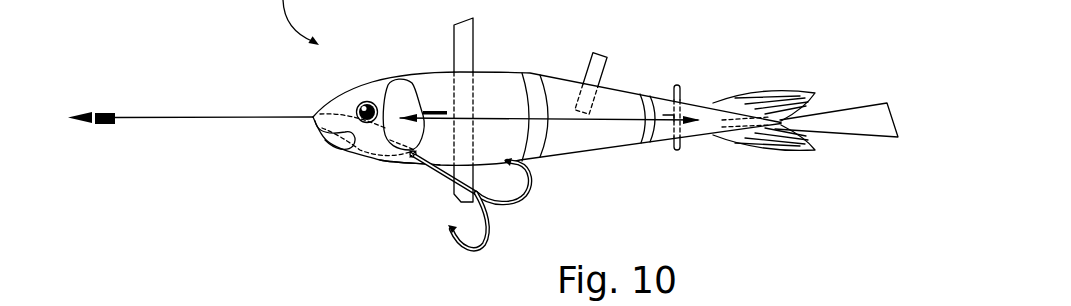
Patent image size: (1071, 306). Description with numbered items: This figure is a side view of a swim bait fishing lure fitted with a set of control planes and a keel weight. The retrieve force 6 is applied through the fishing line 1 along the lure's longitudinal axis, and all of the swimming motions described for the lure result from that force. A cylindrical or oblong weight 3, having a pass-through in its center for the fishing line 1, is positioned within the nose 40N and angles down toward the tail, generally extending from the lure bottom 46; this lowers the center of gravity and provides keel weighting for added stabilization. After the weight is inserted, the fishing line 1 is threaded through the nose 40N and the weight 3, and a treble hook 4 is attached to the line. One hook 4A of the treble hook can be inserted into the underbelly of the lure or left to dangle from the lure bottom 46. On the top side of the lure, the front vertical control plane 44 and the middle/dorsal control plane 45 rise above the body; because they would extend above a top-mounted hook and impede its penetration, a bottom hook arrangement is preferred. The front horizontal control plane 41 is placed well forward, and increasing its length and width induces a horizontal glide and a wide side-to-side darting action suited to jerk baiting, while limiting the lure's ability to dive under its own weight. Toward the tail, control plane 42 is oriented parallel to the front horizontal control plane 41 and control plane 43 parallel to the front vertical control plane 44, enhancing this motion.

The fishing line 1 is at (214, 142).
The weight 3 is at (386, 143).
The treble hook 4 is at (443, 191).
The hook 4A is at (514, 203).
The retrieve force 6 is at (112, 93).
The nose 40N is at (305, 147).
The front horizontal control plane 41 is at (432, 76).
The control plane 42 is at (659, 148).
The control plane 43 is at (690, 99).
The front vertical control plane 44 is at (488, 109).
The middle/dorsal control plane 45 is at (601, 65).
The lure bottom 46 is at (400, 183).